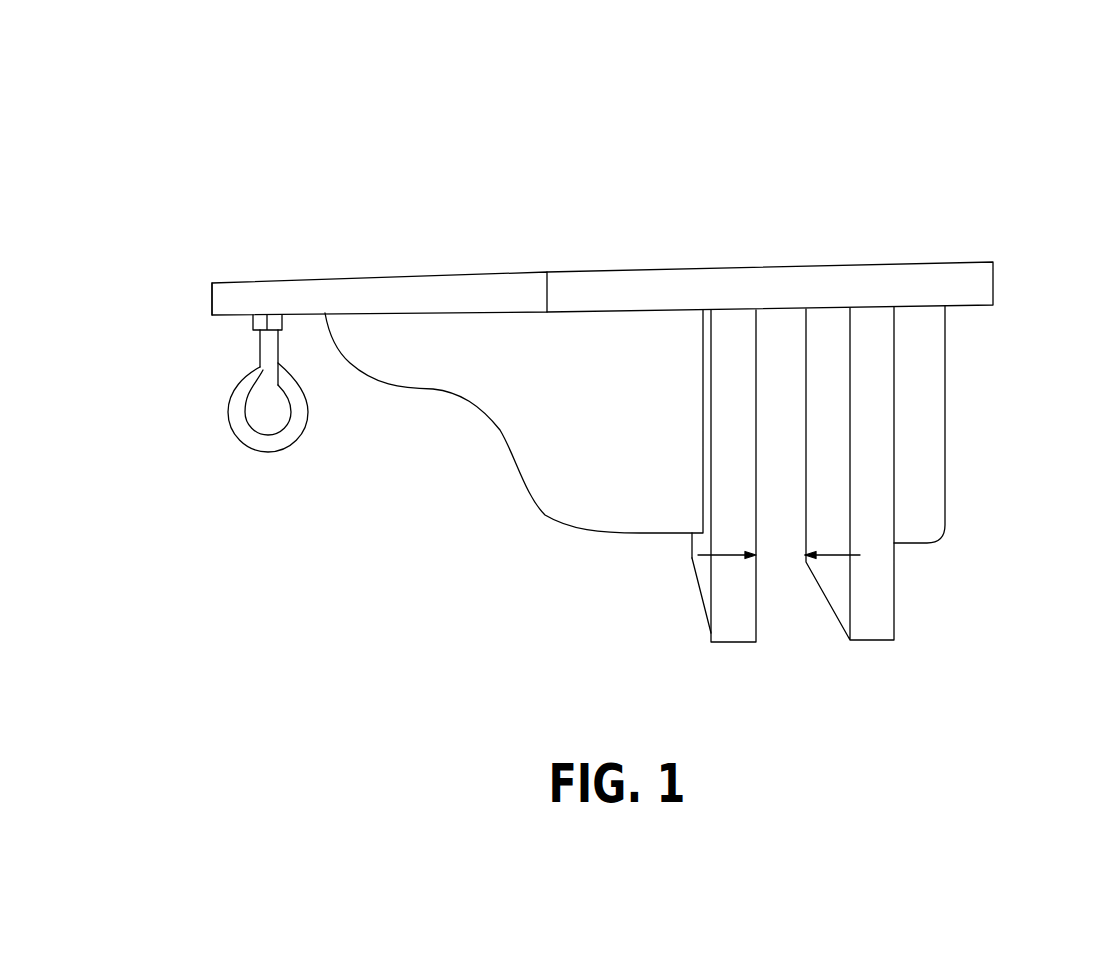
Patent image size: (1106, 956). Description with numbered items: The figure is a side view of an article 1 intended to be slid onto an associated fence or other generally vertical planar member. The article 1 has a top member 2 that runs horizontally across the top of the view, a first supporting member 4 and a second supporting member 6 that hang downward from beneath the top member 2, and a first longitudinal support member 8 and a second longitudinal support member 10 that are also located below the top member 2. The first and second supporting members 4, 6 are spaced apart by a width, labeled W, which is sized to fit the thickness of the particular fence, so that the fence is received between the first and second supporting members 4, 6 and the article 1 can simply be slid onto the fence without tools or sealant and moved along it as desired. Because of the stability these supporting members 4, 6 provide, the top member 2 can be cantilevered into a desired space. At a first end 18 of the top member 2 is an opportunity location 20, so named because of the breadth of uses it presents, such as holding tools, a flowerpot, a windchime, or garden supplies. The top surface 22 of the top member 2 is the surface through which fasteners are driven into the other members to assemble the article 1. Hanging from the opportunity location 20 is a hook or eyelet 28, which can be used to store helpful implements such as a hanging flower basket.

The article 1 is at (950, 164).
The top member 2 is at (962, 283).
The top surface 22 is at (455, 293).
The first end 18 is at (223, 297).
The opportunity location 20 is at (268, 297).
The hook or eyelet 28 is at (277, 440).
The second longitudinal support member 10 is at (563, 483).
The second supporting member 6 is at (728, 627).
The first supporting member 4 is at (870, 618).
The first longitudinal support member 8 is at (926, 493).